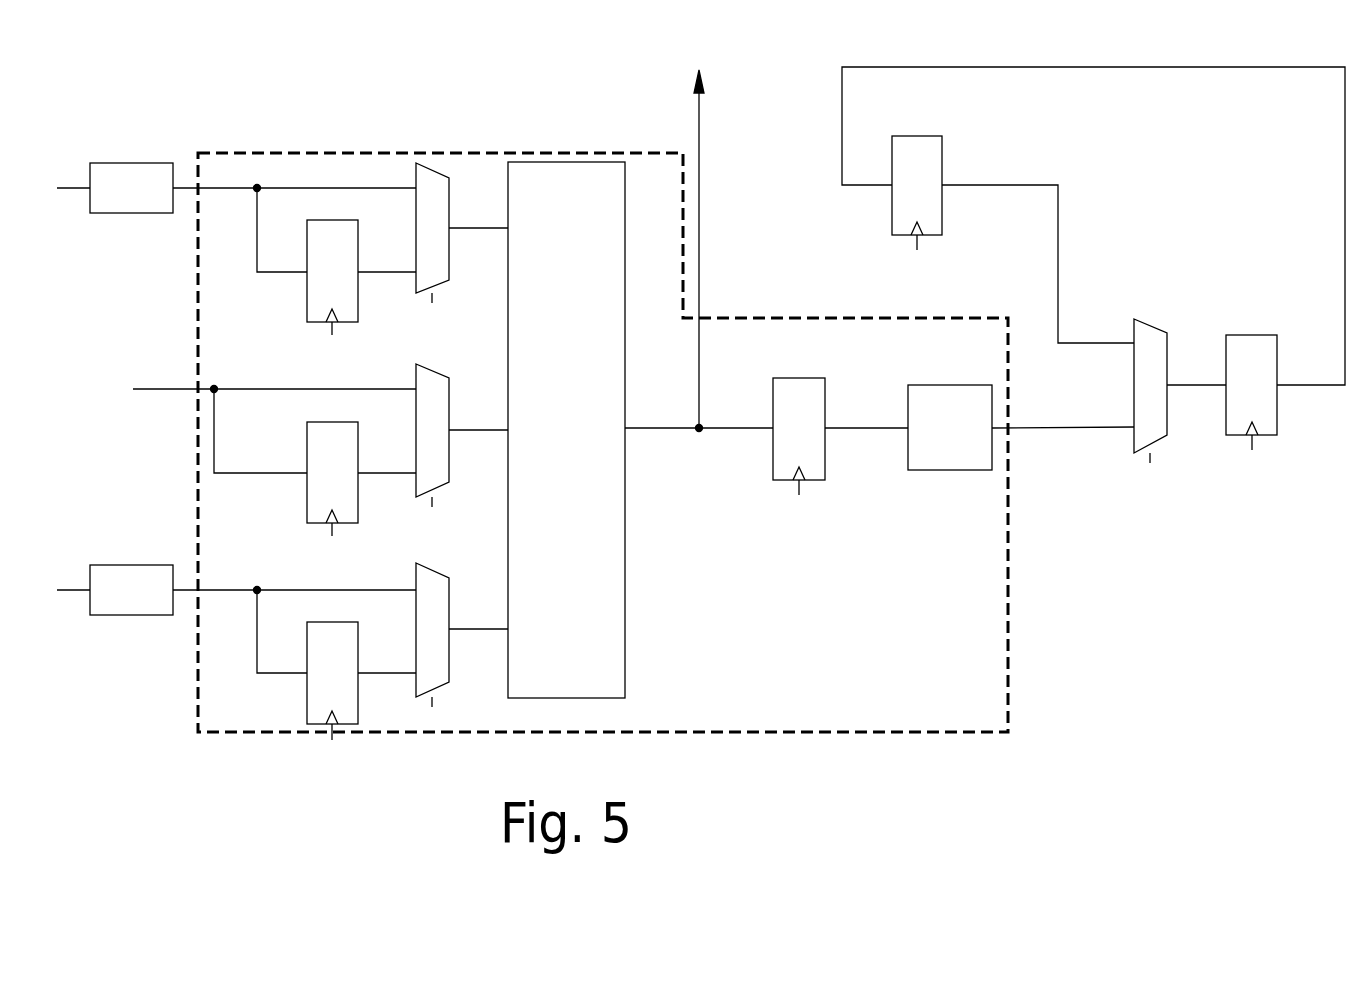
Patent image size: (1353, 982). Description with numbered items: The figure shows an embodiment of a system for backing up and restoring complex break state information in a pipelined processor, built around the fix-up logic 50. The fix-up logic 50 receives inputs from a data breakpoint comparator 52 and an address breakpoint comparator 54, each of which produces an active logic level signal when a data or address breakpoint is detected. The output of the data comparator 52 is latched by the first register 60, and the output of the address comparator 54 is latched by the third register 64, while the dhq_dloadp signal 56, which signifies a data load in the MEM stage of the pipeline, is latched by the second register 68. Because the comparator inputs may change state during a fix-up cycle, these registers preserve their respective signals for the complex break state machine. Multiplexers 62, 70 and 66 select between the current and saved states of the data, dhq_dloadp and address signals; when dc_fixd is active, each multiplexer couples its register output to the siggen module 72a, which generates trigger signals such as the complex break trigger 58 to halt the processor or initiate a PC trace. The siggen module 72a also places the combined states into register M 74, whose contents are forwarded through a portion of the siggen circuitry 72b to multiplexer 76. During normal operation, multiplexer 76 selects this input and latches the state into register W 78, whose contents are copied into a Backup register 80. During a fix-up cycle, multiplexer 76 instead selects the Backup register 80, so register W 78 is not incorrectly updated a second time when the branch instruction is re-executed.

The fix-up logic 50 is at (352, 152).
The data breakpoint comparator 52 is at (158, 172).
The address breakpoint comparator 54 is at (160, 567).
The dhq_dloadp data load signal 56 is at (160, 387).
The complex break trigger output 58 is at (703, 186).
The register C1 60 is at (313, 290).
The multiplexer 62 is at (442, 187).
The register C3 64 is at (315, 690).
The multiplexer 66 is at (443, 583).
The register C2 68 is at (315, 490).
The multiplexer 70 is at (442, 388).
The siggen module 72a is at (607, 177).
The siggen circuitry portion 72b is at (925, 462).
The register M 74 is at (790, 395).
The multiplexer 76 is at (1160, 342).
The register W 78 is at (1268, 410).
The Backup register 80 is at (893, 203).